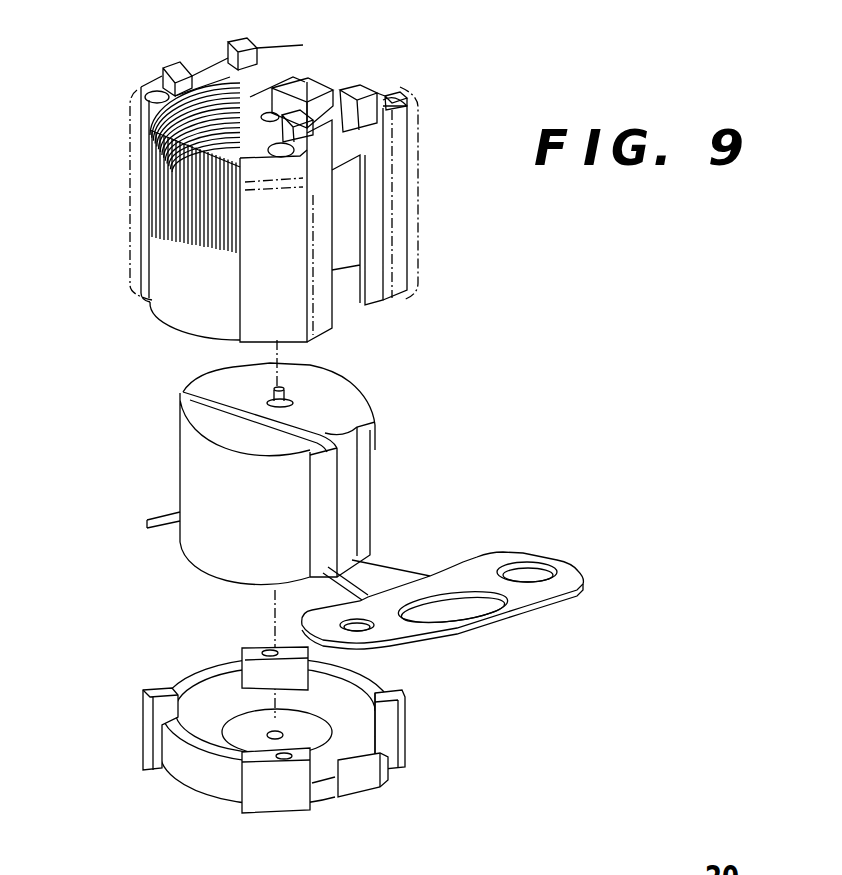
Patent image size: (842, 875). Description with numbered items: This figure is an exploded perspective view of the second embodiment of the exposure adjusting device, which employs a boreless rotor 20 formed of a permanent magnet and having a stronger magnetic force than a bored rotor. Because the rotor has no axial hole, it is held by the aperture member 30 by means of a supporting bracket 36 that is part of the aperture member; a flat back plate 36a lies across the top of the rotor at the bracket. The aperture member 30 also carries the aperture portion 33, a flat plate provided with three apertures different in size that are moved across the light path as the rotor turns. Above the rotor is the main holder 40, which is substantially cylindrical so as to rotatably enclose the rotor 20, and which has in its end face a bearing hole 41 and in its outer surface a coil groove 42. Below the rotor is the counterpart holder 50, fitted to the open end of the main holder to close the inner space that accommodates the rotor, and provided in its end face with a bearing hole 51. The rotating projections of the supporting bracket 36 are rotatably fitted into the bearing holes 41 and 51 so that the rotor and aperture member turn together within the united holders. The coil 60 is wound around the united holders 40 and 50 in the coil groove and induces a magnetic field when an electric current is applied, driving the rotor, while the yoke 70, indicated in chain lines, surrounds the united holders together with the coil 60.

The rotor 20 is at (340, 526).
The aperture member 30 is at (502, 563).
The aperture portion 33 is at (559, 530).
The supporting bracket 36 is at (350, 473).
The back plate 36a is at (358, 402).
The main holder 40 is at (185, 295).
The bearing hole 41 is at (268, 113).
The coil groove 42 is at (322, 97).
The counterpart holder 50 is at (332, 709).
The bearing hole 51 is at (270, 733).
The coil 60 is at (150, 130).
The yoke 70 is at (418, 182).